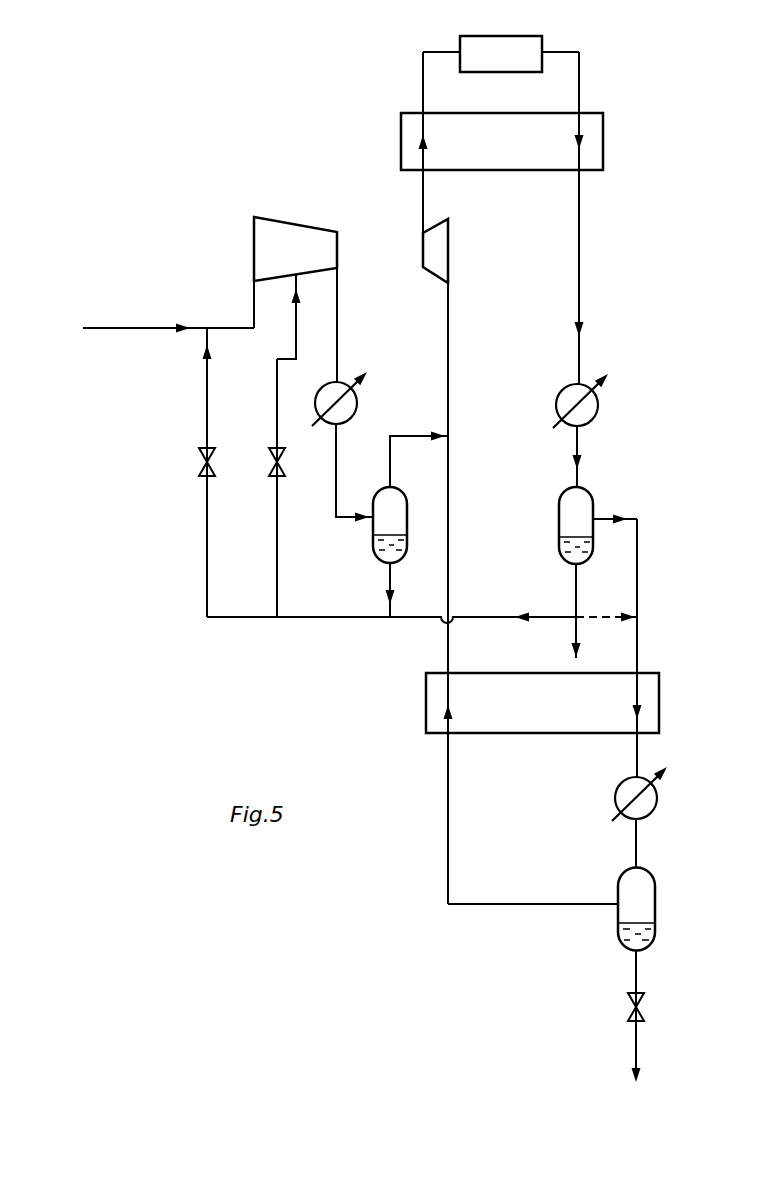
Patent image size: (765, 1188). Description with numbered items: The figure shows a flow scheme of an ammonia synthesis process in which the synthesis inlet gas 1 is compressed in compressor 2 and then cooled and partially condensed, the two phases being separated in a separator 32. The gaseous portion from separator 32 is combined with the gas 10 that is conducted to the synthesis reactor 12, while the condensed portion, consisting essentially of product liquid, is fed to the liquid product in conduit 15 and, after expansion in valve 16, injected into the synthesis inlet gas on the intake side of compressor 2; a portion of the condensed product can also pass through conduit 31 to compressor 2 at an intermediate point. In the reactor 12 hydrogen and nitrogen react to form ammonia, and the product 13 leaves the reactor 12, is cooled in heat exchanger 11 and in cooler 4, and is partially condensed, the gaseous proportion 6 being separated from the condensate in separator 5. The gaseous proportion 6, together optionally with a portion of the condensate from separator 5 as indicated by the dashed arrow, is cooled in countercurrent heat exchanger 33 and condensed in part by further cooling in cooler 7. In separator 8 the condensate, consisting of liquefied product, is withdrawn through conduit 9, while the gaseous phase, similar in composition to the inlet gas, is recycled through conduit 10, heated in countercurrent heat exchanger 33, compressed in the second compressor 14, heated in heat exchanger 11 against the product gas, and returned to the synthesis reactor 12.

The synthesis inlet gas 1 is at (137, 325).
The compressor 2 is at (290, 232).
The heat exchanger / cooler 4 is at (590, 410).
The separator 5 is at (558, 513).
The gaseous proportion 6 is at (640, 586).
The cooler 7 is at (615, 793).
The separator 8 is at (658, 912).
The conduit 9 is at (636, 1037).
The conduit 10 is at (504, 903).
The heat exchanger 11 is at (410, 148).
The synthesis reactor 12 is at (526, 64).
The conduit 13 is at (583, 262).
The second compressor 14 is at (452, 257).
The conduit 15 is at (333, 621).
The valve 16 is at (198, 463).
The conduit 31 is at (276, 574).
The separator 32 is at (372, 541).
The countercurrent heat exchanger 33 is at (427, 707).